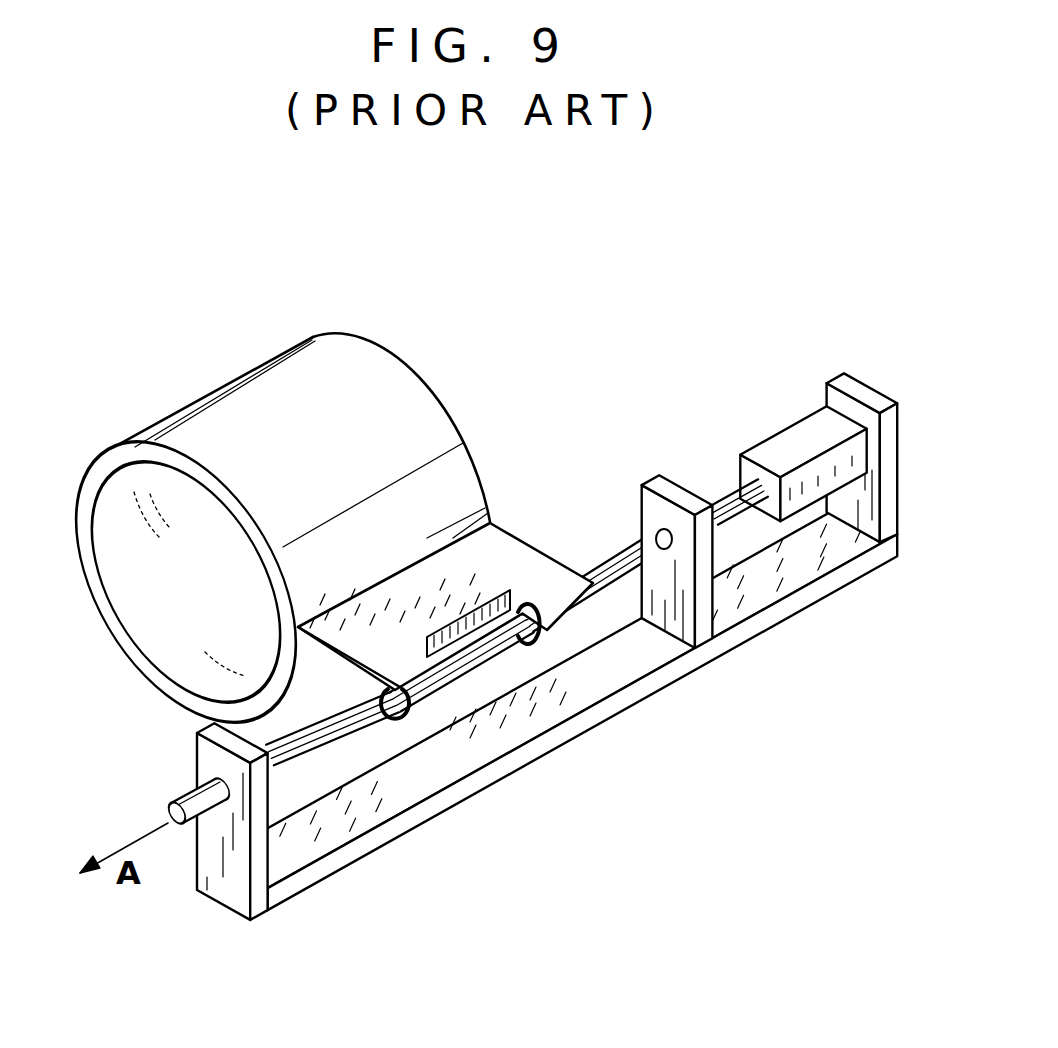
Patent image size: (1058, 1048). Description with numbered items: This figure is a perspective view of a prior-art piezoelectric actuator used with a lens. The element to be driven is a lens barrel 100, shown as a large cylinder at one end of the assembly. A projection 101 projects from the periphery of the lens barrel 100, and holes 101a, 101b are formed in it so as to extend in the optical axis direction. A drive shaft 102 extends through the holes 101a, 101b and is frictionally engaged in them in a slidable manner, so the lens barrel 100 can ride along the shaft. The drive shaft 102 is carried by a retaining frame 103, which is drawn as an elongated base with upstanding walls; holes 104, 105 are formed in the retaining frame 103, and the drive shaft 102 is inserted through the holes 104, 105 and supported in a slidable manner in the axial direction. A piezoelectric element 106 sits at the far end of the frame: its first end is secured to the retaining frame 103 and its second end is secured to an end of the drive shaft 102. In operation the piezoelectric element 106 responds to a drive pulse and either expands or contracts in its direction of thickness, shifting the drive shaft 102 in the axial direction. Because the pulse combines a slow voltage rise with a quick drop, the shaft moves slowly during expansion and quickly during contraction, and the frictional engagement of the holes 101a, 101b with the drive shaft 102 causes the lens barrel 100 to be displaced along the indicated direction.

The lens barrel 100 is at (409, 364).
The projection 101 is at (514, 548).
The hole 101a is at (396, 722).
The hole 101b is at (525, 645).
The drive shaft 102 is at (598, 575).
The retaining frame 103 is at (765, 660).
The hole 104 is at (217, 783).
The hole 105 is at (652, 527).
The piezoelectric element 106 is at (787, 428).